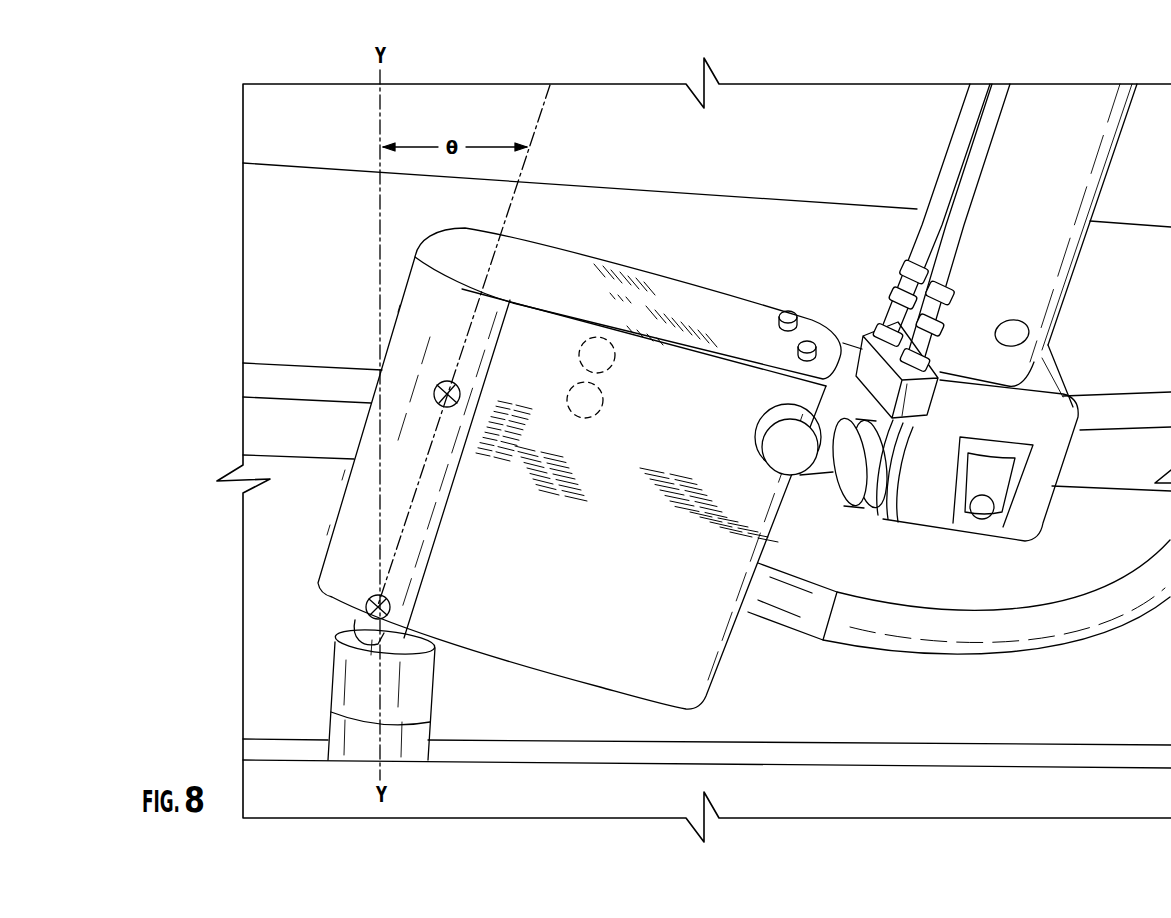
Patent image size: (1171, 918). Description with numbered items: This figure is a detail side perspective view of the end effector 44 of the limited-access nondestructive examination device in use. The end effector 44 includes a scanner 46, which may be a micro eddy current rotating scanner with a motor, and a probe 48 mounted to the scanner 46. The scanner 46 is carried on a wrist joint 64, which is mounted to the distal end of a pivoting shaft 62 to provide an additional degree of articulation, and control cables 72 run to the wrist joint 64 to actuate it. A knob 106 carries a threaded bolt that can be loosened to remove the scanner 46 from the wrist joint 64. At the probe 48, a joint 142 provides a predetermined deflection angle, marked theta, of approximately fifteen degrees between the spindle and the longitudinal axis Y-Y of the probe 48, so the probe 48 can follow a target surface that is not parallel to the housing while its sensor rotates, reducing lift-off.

The end effector 44 is at (325, 537).
The scanner 46 is at (557, 268).
The probe 48 is at (430, 682).
The pivoting shaft 62 is at (1057, 265).
The wrist joint 64 is at (960, 528).
The control cables 72 is at (963, 122).
The knob 106 is at (787, 440).
The joint 142 is at (360, 627).